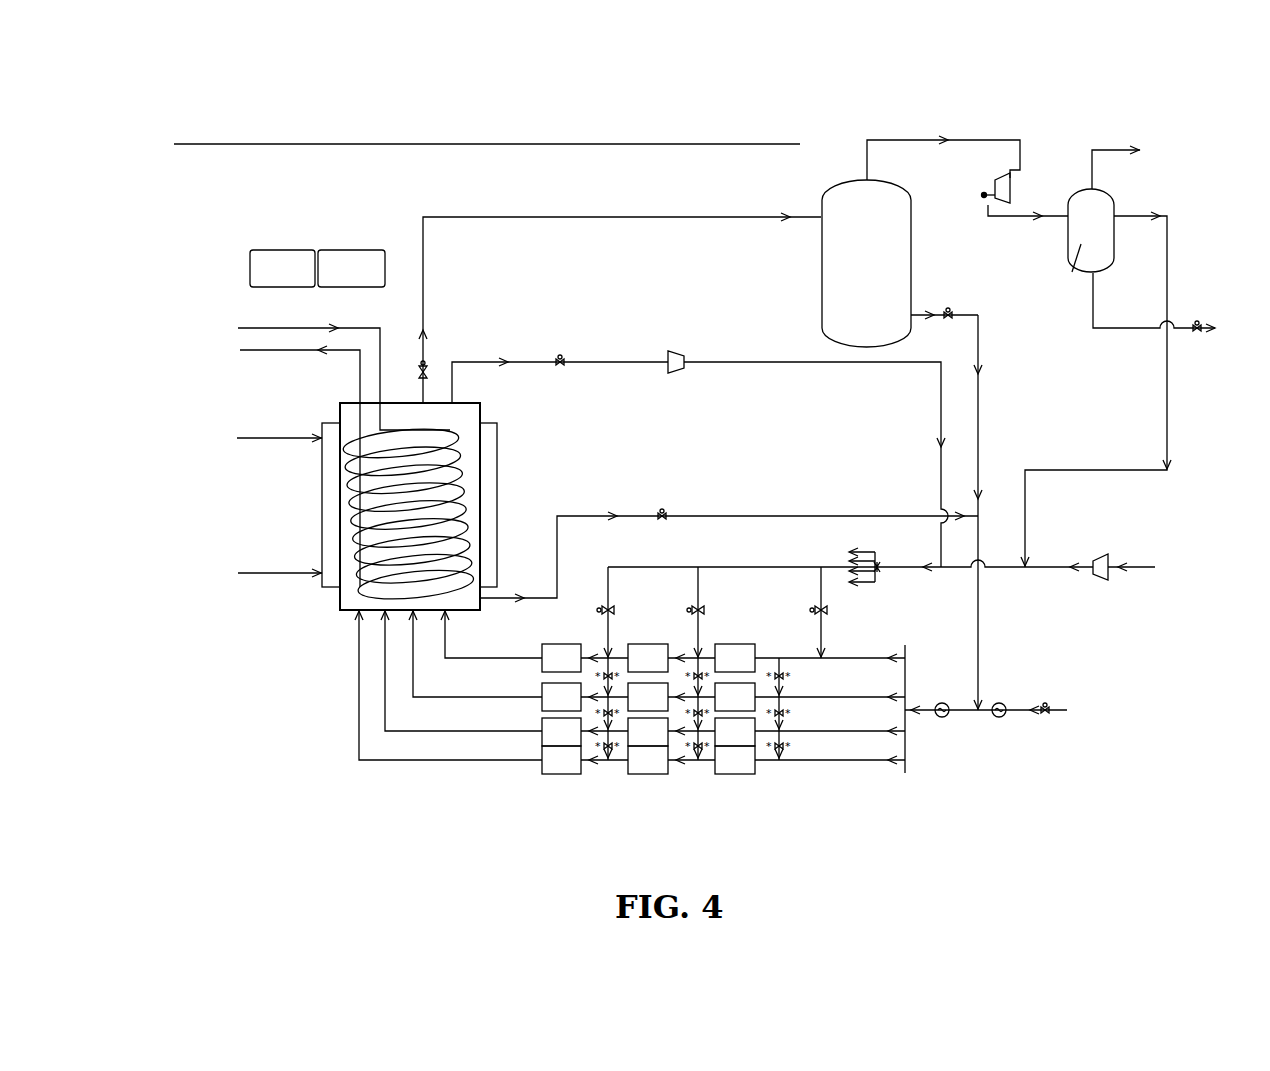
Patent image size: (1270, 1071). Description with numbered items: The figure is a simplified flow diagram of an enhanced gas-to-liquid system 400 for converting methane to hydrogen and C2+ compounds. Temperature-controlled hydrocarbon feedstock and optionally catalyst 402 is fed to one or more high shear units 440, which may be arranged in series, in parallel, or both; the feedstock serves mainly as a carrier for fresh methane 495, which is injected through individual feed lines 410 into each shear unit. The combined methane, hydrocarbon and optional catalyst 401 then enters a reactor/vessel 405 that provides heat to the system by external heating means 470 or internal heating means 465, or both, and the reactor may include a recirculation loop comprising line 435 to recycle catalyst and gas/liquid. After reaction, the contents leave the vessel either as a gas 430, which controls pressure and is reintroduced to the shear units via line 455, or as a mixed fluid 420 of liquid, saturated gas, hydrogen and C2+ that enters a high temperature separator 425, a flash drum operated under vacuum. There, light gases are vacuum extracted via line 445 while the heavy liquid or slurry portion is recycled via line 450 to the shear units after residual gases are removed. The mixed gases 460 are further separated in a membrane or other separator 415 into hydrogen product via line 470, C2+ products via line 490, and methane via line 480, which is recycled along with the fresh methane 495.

The system 400 is at (480, 201).
The combined methane and hydrocarbon and optionally catalyst 401 is at (416, 685).
The hydrocarbon feedstock and optionally catalyst 402 is at (1053, 725).
The reactor/vessel 405 is at (380, 506).
The feed lines 410 is at (738, 602).
The separator/vessel 415 is at (993, 301).
The mixed fluid 420 is at (620, 298).
The high temperature separator 425 is at (833, 263).
The gas 430 is at (568, 359).
The recirculation loop line 435 is at (729, 538).
The high shear units 440 is at (721, 729).
The vacuum extraction line 445 is at (958, 139).
The hydrocarbon recycle stream line 450 is at (1010, 512).
The gas reintroduction line 455 is at (816, 464).
The mixed gases 460 is at (1025, 217).
The internal heating means 465 is at (248, 436).
The external heating means / hydrogen product line 470 is at (659, 339).
The methane recycle line 480 is at (1121, 367).
The C2+ product line 490 is at (1174, 310).
The fresh methane 495 is at (928, 545).